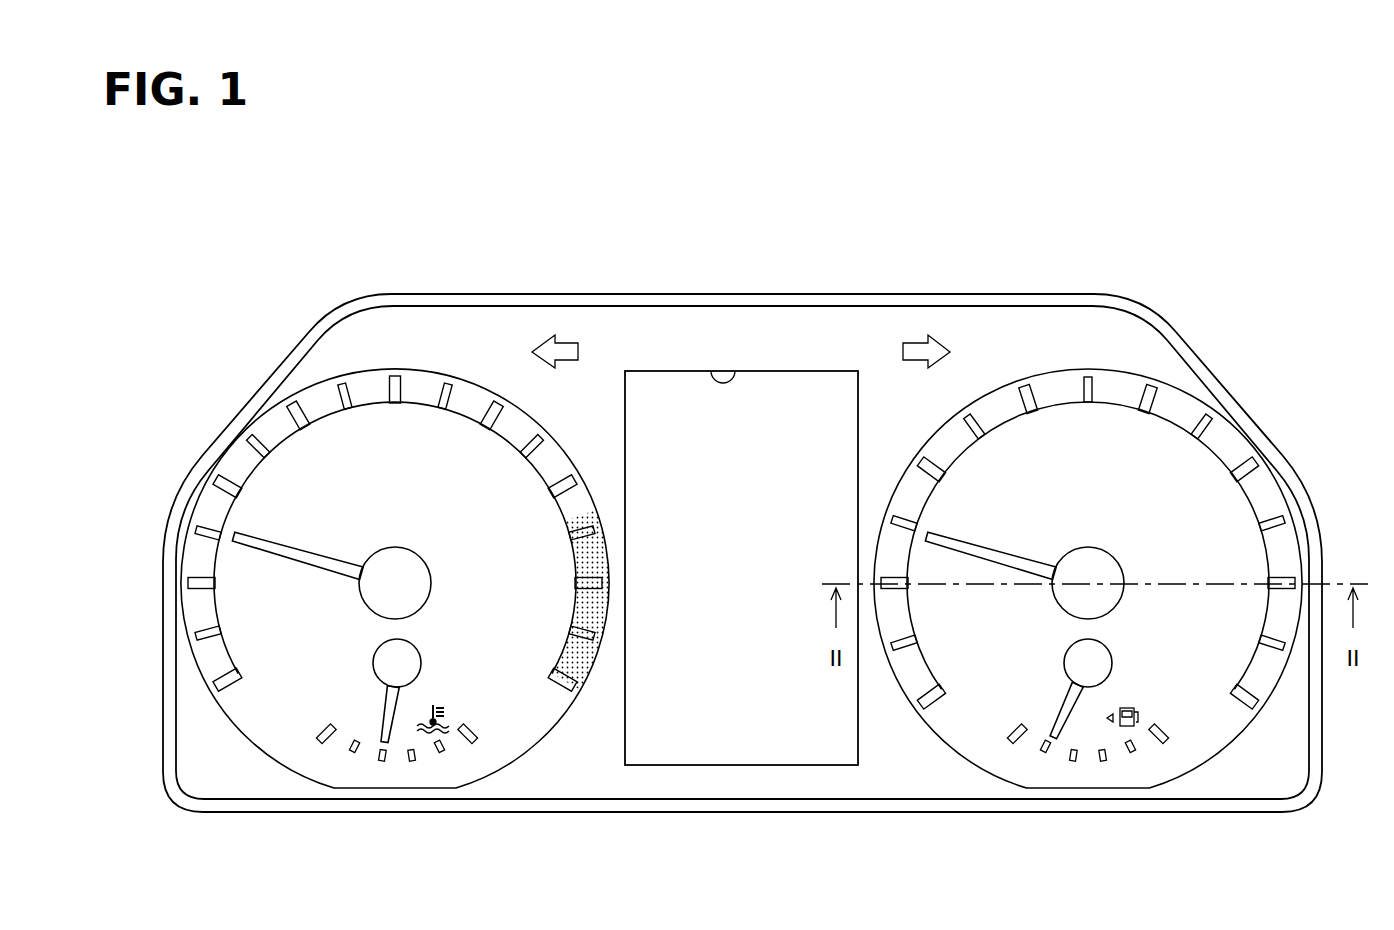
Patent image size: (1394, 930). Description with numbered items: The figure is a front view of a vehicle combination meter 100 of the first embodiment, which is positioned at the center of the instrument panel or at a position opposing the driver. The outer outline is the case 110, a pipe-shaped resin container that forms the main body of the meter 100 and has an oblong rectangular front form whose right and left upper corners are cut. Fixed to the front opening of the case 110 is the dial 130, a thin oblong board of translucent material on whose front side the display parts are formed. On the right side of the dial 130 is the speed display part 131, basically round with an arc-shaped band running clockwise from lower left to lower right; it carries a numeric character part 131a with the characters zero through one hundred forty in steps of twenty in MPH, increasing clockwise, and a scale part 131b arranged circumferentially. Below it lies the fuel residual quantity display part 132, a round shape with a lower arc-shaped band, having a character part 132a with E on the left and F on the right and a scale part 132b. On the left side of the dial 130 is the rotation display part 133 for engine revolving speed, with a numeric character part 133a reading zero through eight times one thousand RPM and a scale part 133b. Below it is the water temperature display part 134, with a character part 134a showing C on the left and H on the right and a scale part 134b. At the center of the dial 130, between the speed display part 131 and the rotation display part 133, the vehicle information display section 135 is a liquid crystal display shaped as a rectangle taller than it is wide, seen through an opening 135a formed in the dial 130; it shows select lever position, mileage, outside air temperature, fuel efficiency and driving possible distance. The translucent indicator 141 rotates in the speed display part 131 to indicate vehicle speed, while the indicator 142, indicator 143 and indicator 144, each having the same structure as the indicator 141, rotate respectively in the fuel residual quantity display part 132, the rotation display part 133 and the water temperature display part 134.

The combination meter 100 is at (438, 288).
The case 110 is at (207, 450).
The dial 130 is at (505, 318).
The speed display part 131 is at (1067, 358).
The numeric character part 131a is at (1150, 428).
The scale part 131b is at (1094, 386).
The fuel residual quantity display part 132 is at (1035, 768).
The character part 132a is at (1180, 730).
The scale part 132b is at (1155, 742).
The rotation display part 133 is at (262, 412).
The numeric character part 133a is at (322, 444).
The scale part 133b is at (344, 384).
The water temperature display part 134 is at (318, 760).
The character part 134a is at (487, 738).
The scale part 134b is at (440, 760).
The vehicle information display section 135 is at (664, 371).
The opening 135a is at (738, 371).
The indicator 141 is at (1013, 554).
The indicator 142 is at (1063, 705).
The indicator 143 is at (320, 554).
The indicator 144 is at (383, 712).